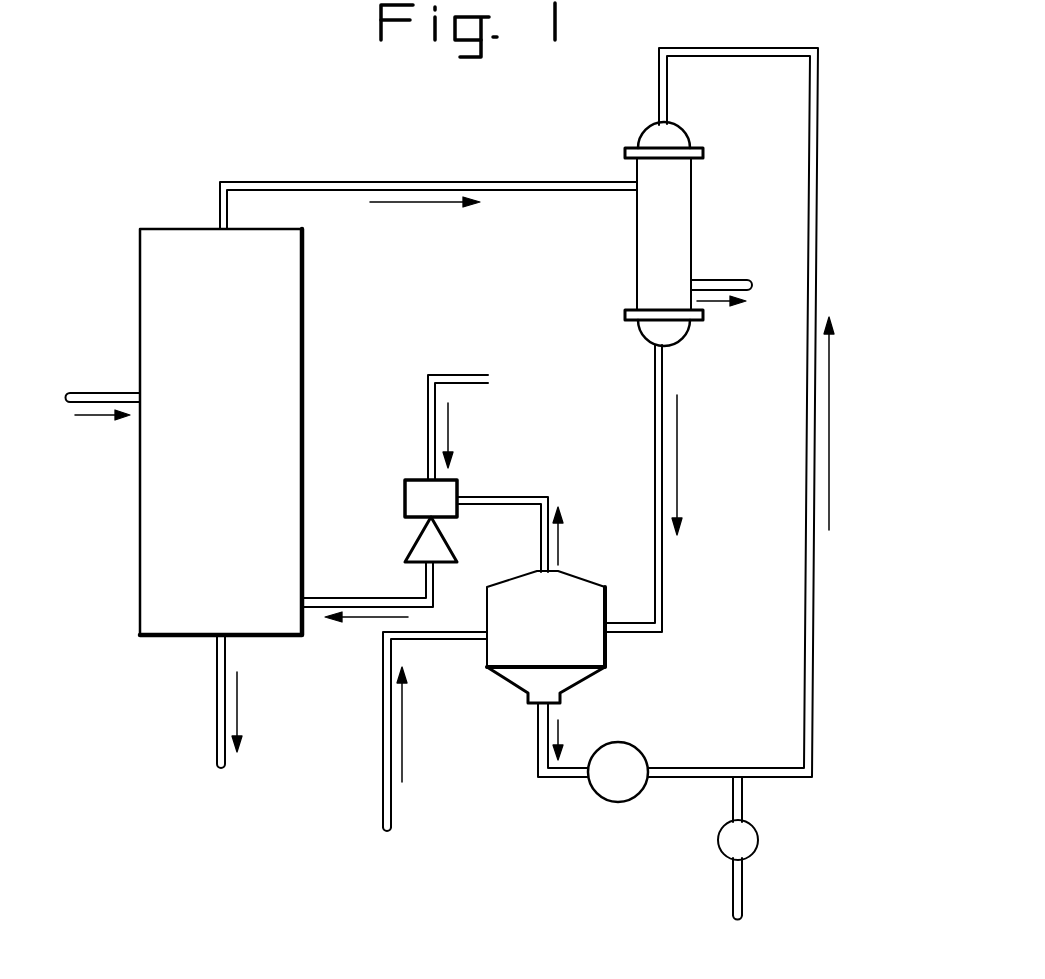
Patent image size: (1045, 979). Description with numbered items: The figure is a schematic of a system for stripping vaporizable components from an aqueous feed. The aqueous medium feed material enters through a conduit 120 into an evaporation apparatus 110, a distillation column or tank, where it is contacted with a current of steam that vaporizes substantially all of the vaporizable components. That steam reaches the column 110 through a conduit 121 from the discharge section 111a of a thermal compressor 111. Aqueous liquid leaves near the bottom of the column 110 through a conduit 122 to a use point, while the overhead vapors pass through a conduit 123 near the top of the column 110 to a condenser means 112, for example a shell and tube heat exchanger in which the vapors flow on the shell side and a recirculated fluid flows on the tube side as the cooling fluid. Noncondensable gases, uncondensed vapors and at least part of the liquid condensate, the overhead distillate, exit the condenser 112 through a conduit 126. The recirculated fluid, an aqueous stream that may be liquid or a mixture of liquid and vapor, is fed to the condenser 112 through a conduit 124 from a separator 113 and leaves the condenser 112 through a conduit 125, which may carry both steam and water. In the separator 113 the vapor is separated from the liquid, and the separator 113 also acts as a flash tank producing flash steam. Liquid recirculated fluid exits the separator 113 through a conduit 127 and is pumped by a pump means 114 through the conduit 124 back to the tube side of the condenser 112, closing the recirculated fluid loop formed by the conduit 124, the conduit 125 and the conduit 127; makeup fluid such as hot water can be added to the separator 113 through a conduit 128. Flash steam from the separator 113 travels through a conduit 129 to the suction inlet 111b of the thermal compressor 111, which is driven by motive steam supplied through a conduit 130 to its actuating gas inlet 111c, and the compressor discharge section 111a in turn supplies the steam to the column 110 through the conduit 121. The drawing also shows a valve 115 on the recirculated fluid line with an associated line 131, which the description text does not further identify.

The evaporation apparatus 110 is at (140, 532).
The thermal compressor 111 is at (426, 504).
The discharge section 111a is at (442, 563).
The suction inlet 111b is at (460, 495).
The actuating gas inlet 111c is at (428, 480).
The condenser means 112 is at (668, 183).
The separator 113 is at (565, 650).
The pump means 114 is at (602, 797).
The valve 115 is at (758, 840).
The conduit 120 is at (112, 393).
The conduit 121 is at (376, 598).
The conduit 122 is at (217, 700).
The conduit 123 is at (364, 182).
The conduit 124 is at (659, 85).
The conduit 125 is at (663, 388).
The conduit 126 is at (714, 280).
The conduit 127 is at (538, 748).
The conduit 128 is at (383, 788).
The conduit 129 is at (522, 497).
The conduit 130 is at (456, 375).
The purge line 131 is at (733, 885).